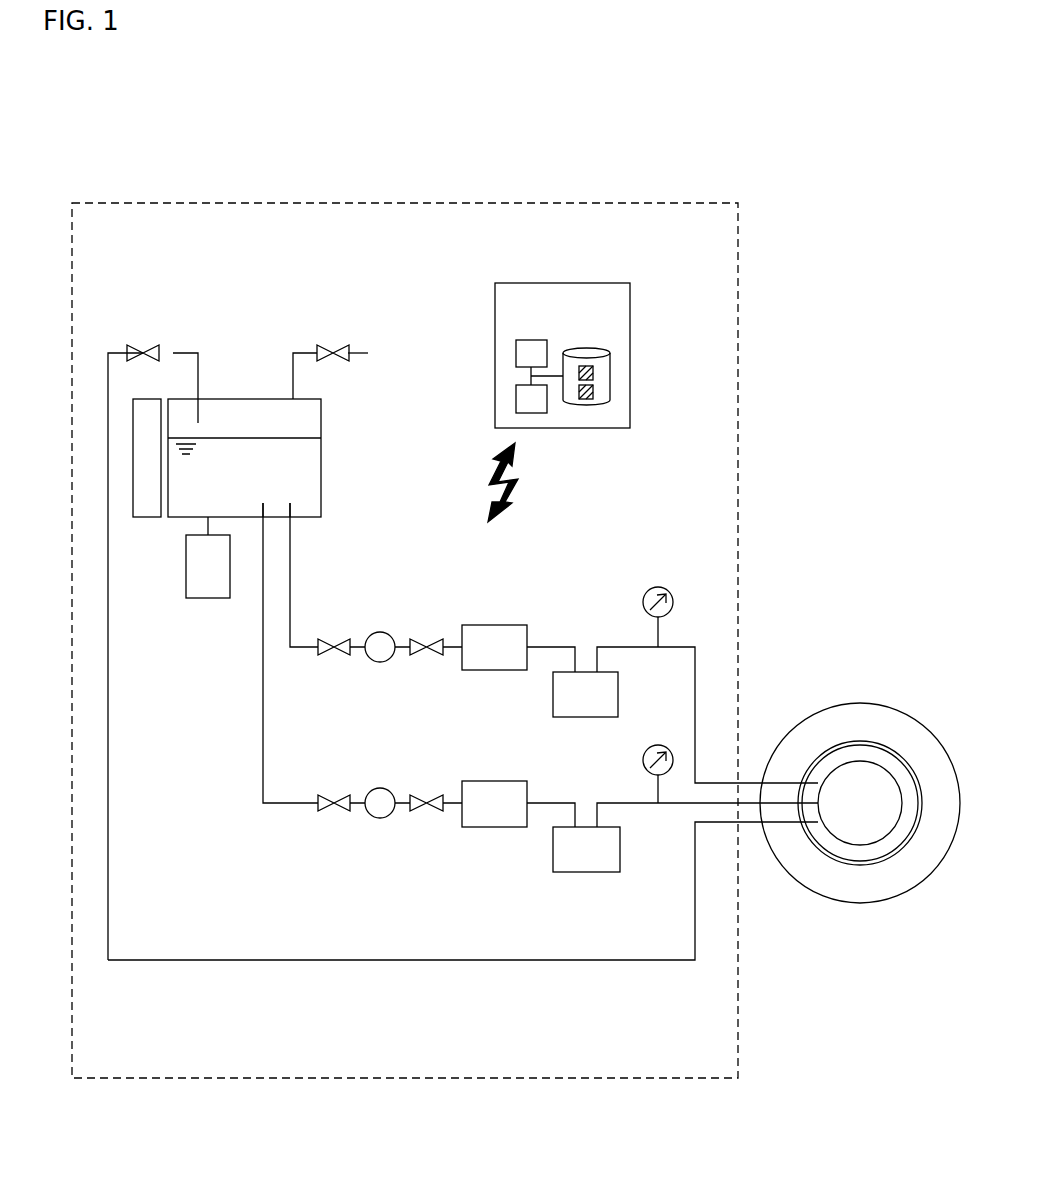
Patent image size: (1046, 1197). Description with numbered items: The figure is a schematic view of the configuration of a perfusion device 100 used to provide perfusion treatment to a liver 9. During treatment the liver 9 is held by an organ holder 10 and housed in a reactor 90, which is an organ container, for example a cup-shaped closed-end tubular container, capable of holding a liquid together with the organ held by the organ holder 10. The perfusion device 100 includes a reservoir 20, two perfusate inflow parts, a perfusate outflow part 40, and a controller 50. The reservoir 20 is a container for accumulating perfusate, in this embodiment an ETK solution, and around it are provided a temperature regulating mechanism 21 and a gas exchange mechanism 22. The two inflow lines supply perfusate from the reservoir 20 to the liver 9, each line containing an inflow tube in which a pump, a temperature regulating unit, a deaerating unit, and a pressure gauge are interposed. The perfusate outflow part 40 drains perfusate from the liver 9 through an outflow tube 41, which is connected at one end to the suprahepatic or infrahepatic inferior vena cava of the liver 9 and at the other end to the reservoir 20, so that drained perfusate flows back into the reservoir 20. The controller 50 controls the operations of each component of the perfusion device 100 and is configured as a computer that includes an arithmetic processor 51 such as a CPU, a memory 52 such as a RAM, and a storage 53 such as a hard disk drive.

The perfusion device 100 is at (651, 189).
The liver 9 is at (865, 770).
The organ holder 10 is at (853, 865).
The reactor 90 is at (888, 899).
The reservoir 20 is at (321, 420).
The temperature regulating mechanism 21 is at (146, 505).
The gas exchange mechanism 22 is at (208, 598).
The perfusate outflow part 40 is at (225, 993).
The outflow tube 41 is at (402, 962).
The controller 50 is at (603, 283).
The arithmetic processor 51 is at (516, 353).
The memory 52 is at (516, 400).
The storage 53 is at (594, 352).